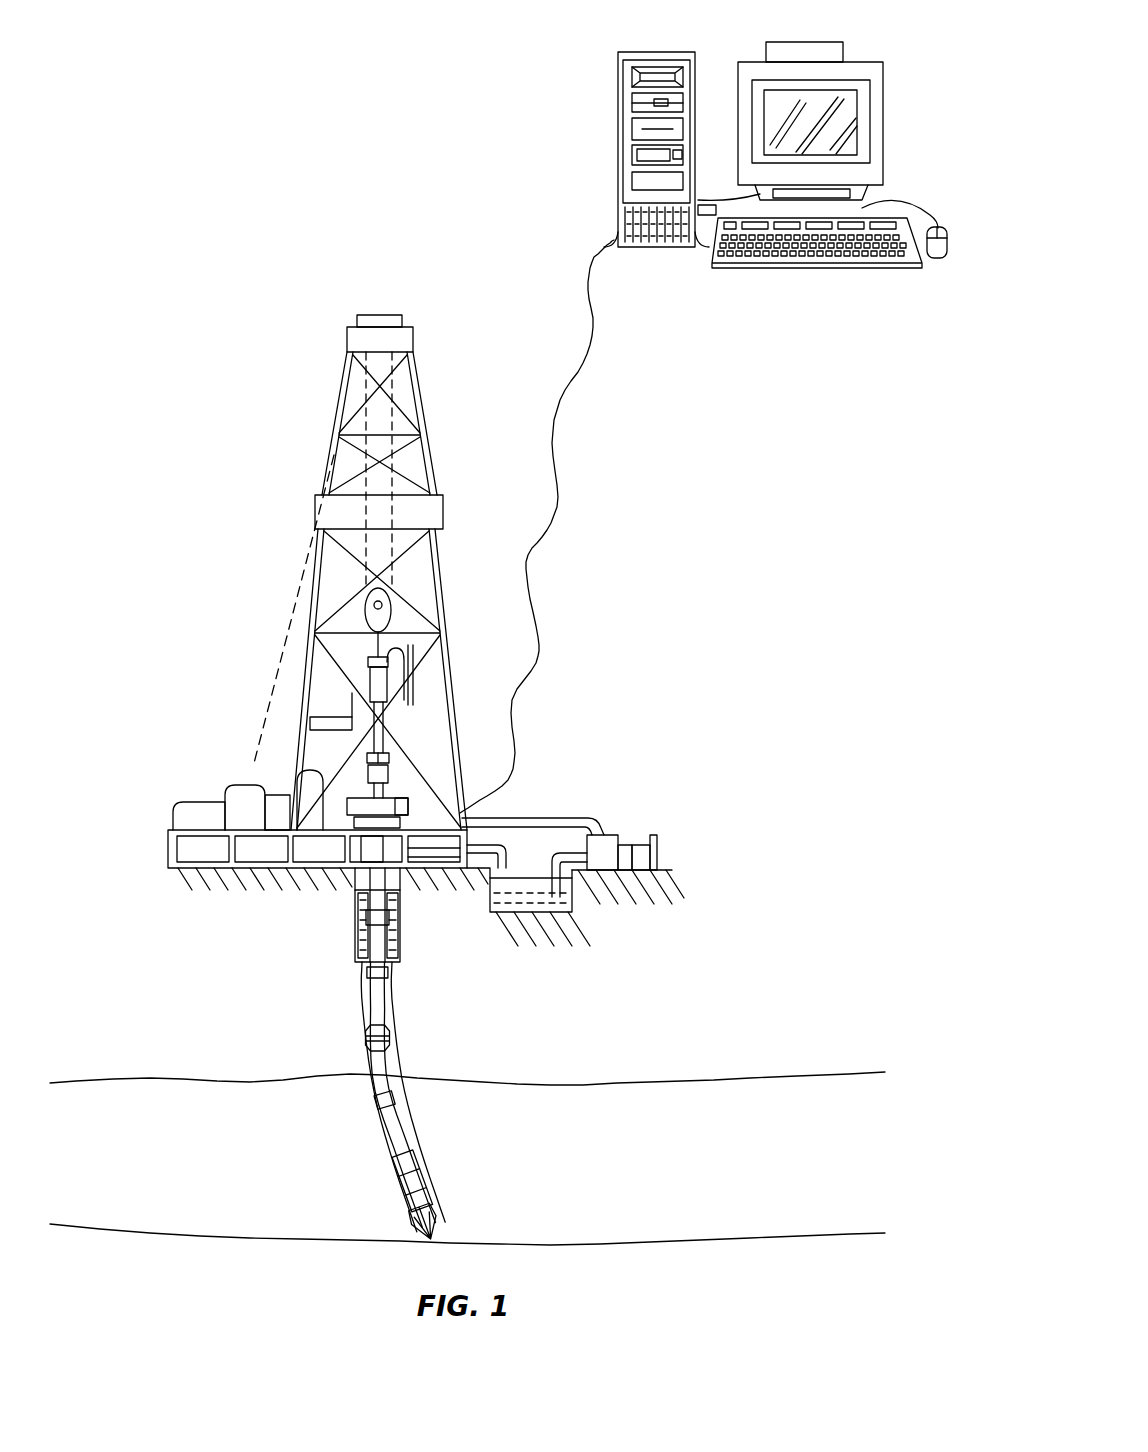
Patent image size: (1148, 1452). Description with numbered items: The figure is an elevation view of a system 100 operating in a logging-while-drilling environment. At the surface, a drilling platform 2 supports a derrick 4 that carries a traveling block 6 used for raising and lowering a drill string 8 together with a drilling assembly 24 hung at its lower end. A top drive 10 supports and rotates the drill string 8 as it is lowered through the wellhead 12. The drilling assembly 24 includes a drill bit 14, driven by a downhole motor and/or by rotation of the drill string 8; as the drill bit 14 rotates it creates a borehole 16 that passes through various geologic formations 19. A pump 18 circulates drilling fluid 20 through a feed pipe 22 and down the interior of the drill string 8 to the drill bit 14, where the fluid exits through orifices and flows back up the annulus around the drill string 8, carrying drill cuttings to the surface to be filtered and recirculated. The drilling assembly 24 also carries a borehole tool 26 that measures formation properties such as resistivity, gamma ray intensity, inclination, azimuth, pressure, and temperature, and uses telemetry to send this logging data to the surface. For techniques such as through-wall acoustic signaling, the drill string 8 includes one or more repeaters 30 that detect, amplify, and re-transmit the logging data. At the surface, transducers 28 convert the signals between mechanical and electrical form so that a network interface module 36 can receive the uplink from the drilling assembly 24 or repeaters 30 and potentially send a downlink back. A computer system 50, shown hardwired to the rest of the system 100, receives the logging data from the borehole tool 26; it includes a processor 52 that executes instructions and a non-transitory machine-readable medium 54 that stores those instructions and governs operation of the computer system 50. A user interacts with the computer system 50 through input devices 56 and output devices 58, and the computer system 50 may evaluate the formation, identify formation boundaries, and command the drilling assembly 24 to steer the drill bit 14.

The system 100 is at (196, 151).
The drilling platform 2 is at (168, 835).
The derrick 4 is at (425, 427).
The traveling block 6 is at (392, 620).
The drill string 8 is at (378, 1013).
The top drive 10 is at (380, 687).
The wellhead 12 is at (390, 757).
The drill bit 14 is at (440, 1208).
The borehole 16 is at (397, 1017).
The pump 18 is at (610, 835).
The geologic formations 19 is at (600, 1171).
The drilling fluid 20 is at (503, 903).
The feed pipe 22 is at (522, 818).
The drilling assembly 24 is at (420, 1235).
The borehole tool 26 is at (410, 1175).
The transducers 28 is at (385, 737).
The repeaters 30 is at (366, 1041).
The network interface module 36 is at (268, 795).
The computer system 50 is at (696, 70).
The processor 52 is at (637, 82).
The non-transitory machine-readable medium 54 is at (637, 108).
The input devices 56 is at (910, 199).
The output devices 58 is at (885, 118).